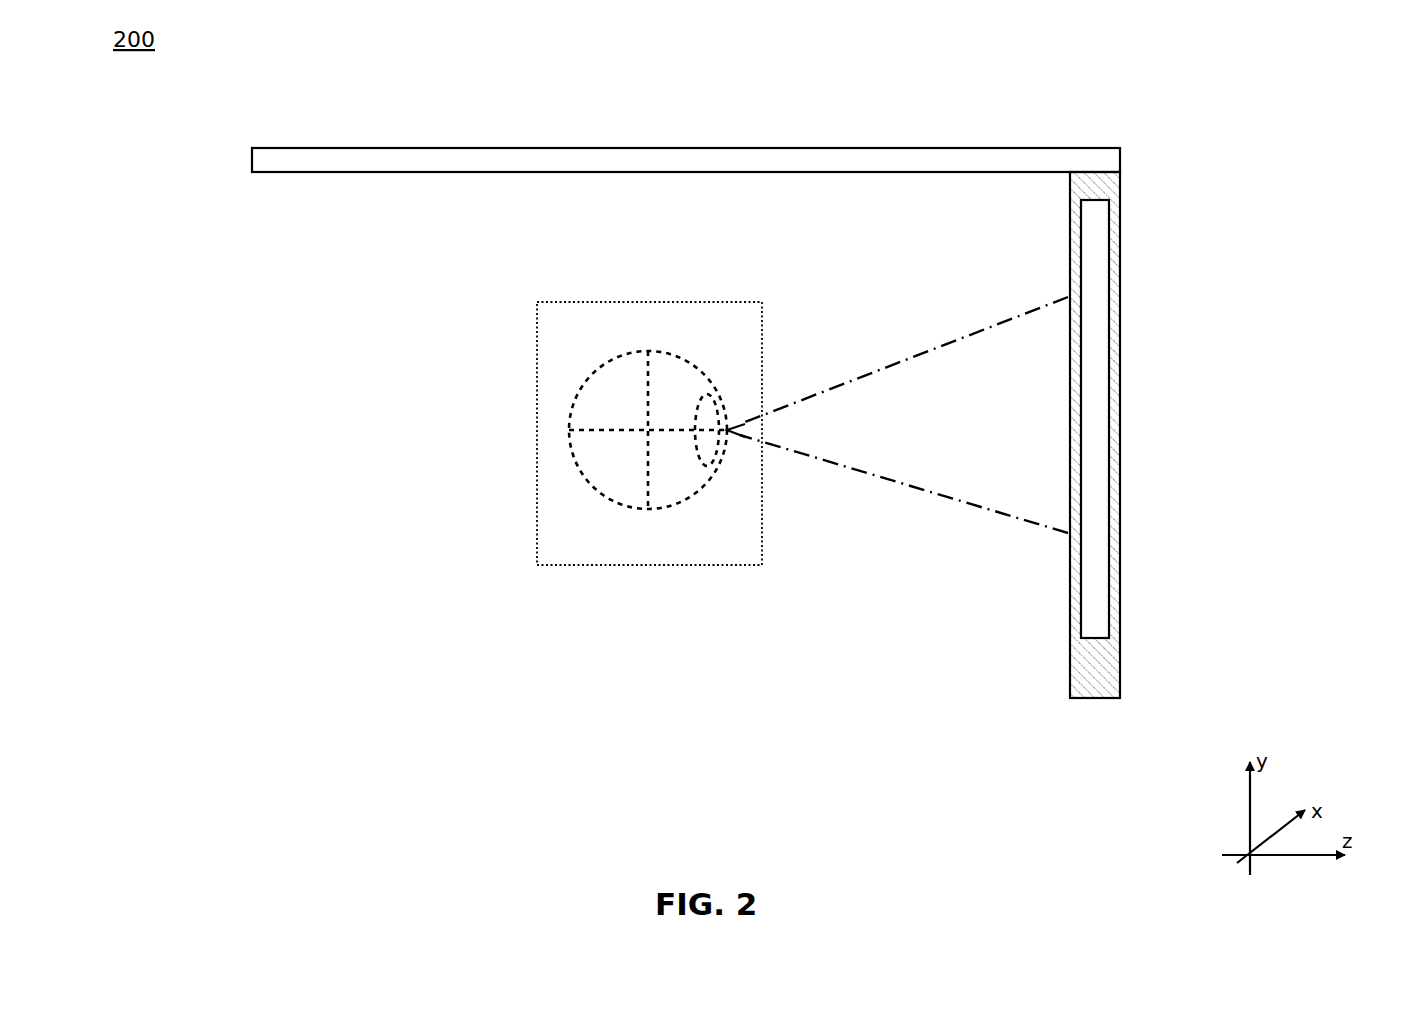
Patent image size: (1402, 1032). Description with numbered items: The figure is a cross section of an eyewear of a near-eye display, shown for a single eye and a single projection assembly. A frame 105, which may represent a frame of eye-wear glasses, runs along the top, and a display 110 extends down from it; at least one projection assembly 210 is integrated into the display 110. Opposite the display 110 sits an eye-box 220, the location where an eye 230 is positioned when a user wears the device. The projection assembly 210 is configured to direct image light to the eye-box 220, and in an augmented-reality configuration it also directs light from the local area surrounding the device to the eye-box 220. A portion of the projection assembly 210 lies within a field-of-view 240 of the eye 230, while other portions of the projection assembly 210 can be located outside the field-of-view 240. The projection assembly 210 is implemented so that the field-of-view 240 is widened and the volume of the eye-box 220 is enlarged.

The frame 105 is at (485, 140).
The display 110 is at (1120, 573).
The projection assembly 210 is at (1095, 340).
The eye-box 220 is at (537, 360).
The eye 230 is at (585, 480).
The field-of-view 240 is at (930, 375).